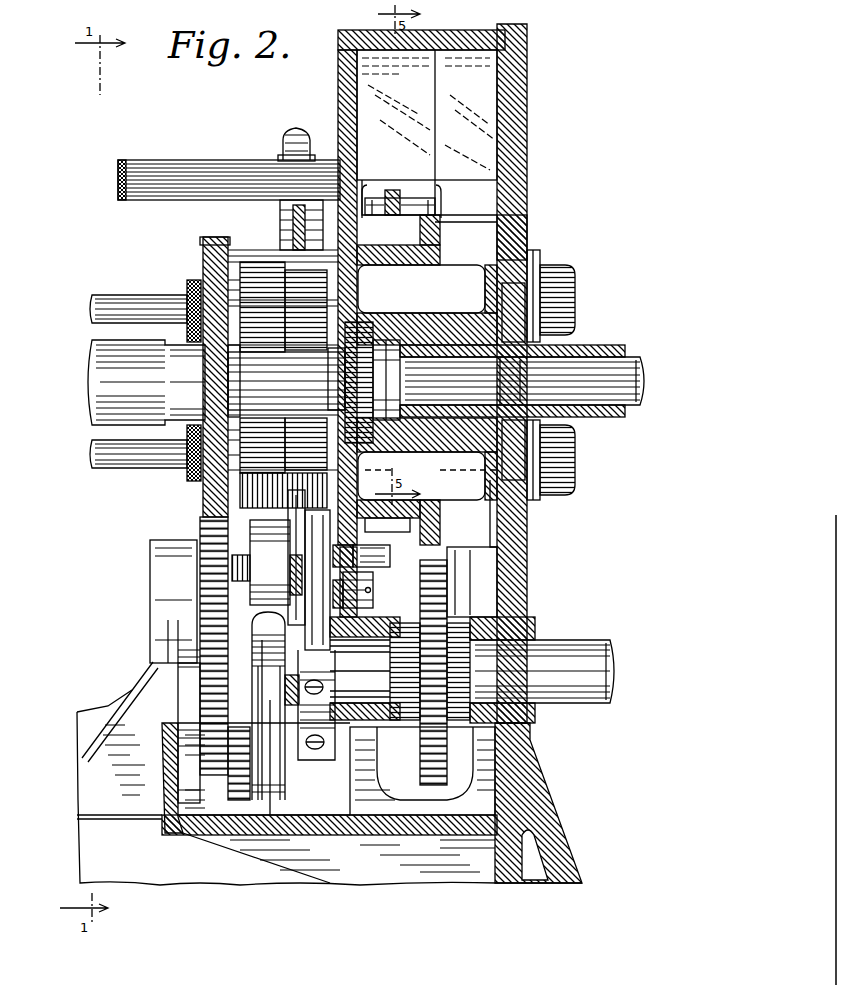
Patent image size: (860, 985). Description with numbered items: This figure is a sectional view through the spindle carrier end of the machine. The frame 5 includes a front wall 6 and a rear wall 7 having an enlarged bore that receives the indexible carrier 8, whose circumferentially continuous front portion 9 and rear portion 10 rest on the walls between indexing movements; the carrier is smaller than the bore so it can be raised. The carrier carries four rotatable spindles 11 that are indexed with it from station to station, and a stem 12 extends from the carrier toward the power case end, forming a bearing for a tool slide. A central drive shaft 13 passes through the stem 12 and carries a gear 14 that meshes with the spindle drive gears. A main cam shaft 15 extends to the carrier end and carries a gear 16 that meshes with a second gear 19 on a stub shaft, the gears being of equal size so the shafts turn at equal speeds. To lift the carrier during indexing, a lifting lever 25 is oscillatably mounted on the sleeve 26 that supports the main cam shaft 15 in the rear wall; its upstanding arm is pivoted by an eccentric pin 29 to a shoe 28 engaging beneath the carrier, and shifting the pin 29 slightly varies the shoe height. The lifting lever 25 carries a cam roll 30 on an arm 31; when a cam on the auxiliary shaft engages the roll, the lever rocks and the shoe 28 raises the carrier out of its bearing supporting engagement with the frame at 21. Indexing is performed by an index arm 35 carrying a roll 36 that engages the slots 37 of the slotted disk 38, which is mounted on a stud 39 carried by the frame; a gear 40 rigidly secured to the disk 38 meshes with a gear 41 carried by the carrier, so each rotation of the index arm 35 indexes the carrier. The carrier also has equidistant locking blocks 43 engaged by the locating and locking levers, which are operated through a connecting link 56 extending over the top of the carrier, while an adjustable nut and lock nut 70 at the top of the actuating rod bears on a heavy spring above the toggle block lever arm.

The frame 5 is at (545, 806).
The front wall 6 is at (527, 130).
The rear wall 7 is at (340, 88).
The indexible carrier 8 is at (455, 312).
The front portion 9 is at (528, 245).
The rear portion 10 is at (375, 283).
The rotatable spindles 11 is at (560, 300).
The stem 12 is at (608, 347).
The central drive shaft 13 is at (638, 376).
The gear 14 is at (412, 380).
The main cam shaft 15 is at (472, 670).
The gear 16 is at (440, 614).
The second gear 19 is at (450, 560).
The bearing supporting engagement 21 is at (400, 465).
The lifting lever 25 is at (322, 755).
The sleeve 26 is at (380, 640).
The shoe 28 is at (362, 571).
The pin 29 is at (370, 592).
The cam roll 30 is at (292, 556).
The arm 31 is at (322, 636).
The index arm 35 is at (268, 762).
The roll 36 is at (268, 804).
The slots 37 is at (236, 567).
The slotted disk 38 is at (238, 620).
The stub shaft or stud 39 is at (165, 618).
The gear 40 is at (206, 532).
The gear 41 is at (212, 507).
The locking blocks 43 is at (440, 250).
The connecting link 56 is at (400, 190).
The nut and lock nut 70 is at (285, 146).